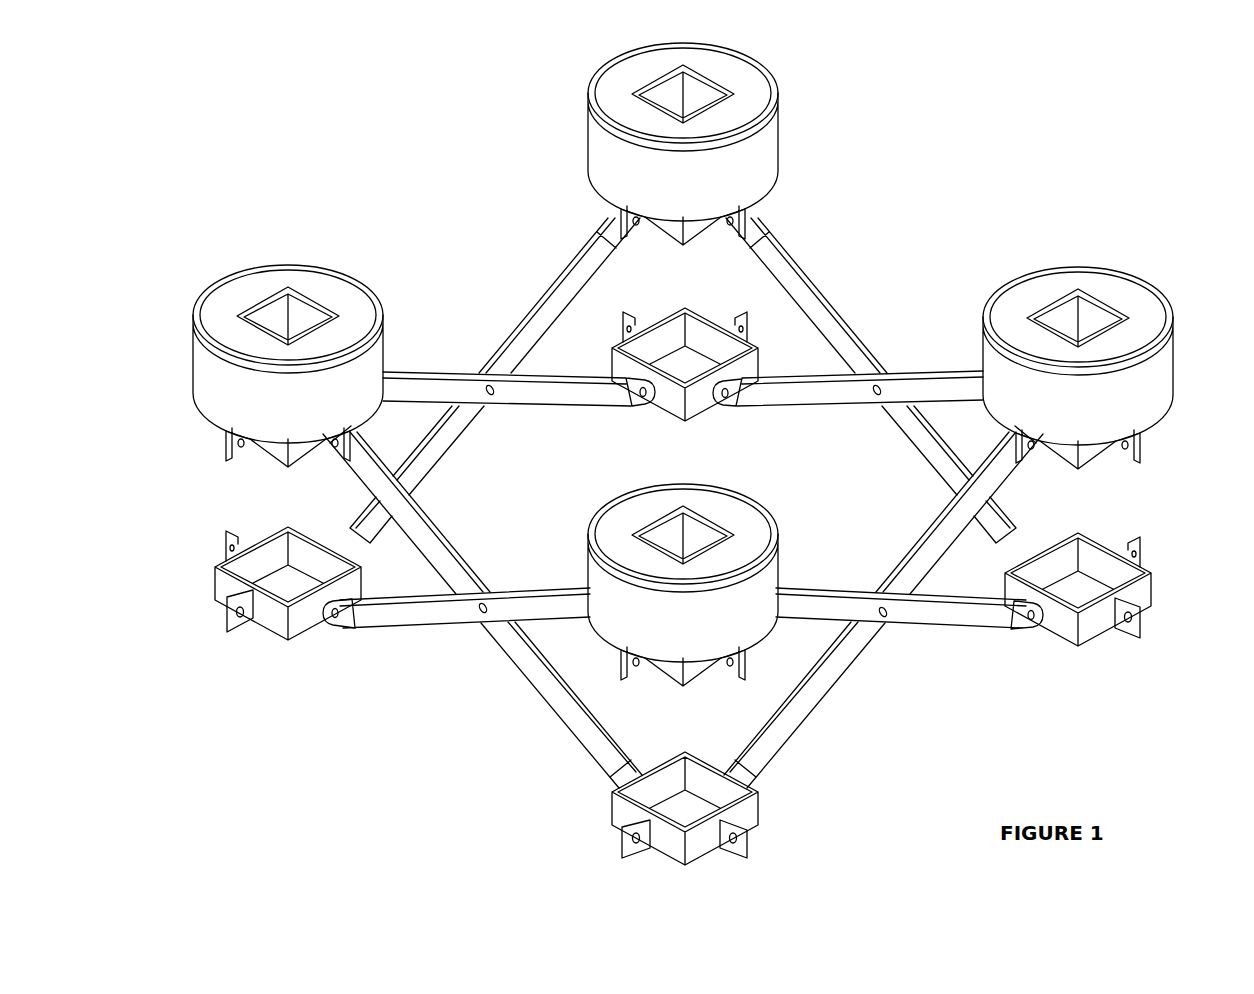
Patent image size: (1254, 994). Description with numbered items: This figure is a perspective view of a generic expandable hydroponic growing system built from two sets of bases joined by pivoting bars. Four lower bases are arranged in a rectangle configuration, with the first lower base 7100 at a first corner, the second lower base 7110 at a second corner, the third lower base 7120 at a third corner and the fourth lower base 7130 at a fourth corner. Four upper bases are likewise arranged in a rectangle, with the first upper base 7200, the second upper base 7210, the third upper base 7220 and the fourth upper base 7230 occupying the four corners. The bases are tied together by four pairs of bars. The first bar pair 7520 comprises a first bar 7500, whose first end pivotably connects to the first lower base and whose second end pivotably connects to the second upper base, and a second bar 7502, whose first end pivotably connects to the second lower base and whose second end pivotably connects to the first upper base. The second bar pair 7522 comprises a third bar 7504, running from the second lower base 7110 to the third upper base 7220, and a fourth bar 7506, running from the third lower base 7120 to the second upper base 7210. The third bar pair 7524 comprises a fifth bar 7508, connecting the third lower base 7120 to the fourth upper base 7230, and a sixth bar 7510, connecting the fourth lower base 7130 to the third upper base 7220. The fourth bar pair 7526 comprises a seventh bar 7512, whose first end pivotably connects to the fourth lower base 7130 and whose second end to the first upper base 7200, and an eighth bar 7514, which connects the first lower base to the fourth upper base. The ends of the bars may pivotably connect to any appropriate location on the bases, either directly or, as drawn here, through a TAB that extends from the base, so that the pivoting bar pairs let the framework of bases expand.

The first upper base 7200 is at (262, 258).
The second upper base 7210 is at (747, 68).
The third upper base 7220 is at (1147, 284).
The fourth upper base 7230 is at (702, 641).
The first lower base 7100 is at (283, 640).
The second lower base 7110 is at (684, 306).
The third lower base 7120 is at (1140, 562).
The fourth lower base 7130 is at (697, 864).
The first bar 7500 is at (433, 470).
The second bar 7502 is at (550, 329).
The third bar 7504 is at (790, 412).
The fourth bar 7506 is at (847, 322).
The fifth bar 7508 is at (940, 594).
The sixth bar 7510 is at (793, 728).
The seventh bar 7512 is at (612, 722).
The eighth bar 7514 is at (456, 616).
The first bar pair 7520 is at (490, 333).
The second bar pair 7522 is at (832, 262).
The third bar pair 7524 is at (920, 640).
The fourth bar pair 7526 is at (495, 662).
The tab TAB is at (345, 635).